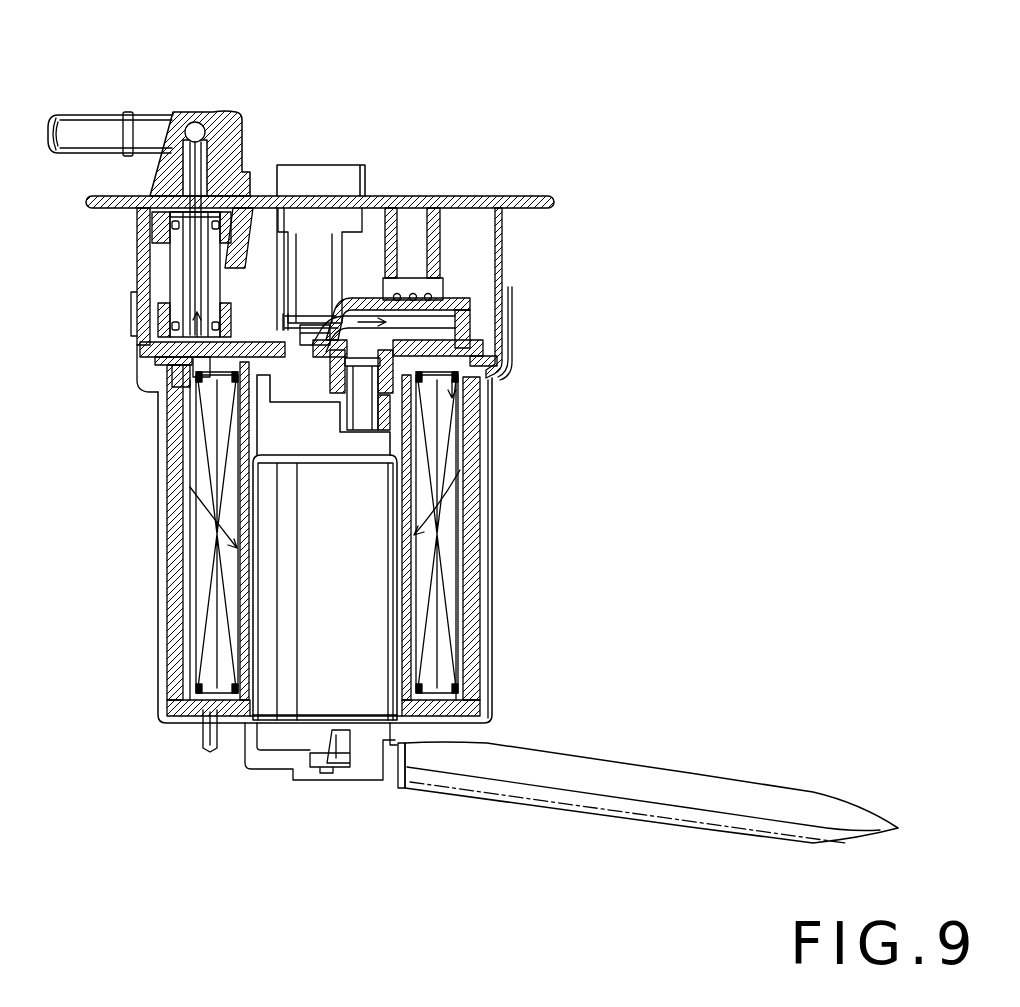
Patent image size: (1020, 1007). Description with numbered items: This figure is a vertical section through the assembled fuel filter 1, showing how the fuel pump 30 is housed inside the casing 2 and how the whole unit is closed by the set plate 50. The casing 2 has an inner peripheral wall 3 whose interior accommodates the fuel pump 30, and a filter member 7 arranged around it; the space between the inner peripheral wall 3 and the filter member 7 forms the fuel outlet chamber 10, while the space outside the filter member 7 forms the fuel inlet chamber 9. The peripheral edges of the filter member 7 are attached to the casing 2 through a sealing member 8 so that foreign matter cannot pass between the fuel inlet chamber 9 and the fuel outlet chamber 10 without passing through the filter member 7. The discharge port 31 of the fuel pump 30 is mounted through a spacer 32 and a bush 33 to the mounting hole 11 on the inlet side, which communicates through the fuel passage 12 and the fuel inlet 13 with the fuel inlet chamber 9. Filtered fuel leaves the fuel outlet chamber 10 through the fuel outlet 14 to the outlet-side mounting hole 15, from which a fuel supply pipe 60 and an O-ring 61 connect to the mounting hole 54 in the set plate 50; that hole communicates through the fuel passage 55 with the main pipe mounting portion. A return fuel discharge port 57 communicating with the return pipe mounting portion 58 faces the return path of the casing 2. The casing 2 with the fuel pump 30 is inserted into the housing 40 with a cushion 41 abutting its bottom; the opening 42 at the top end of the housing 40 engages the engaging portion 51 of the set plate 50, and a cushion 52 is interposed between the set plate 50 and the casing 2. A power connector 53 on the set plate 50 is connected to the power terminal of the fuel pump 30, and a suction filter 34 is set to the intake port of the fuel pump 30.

The fuel filter 1 is at (165, 495).
The casing 2 is at (475, 492).
The inner peripheral wall 3 is at (405, 580).
The filter member 7 is at (448, 576).
The sealing member 8 is at (198, 376).
The fuel inlet chamber 9 is at (462, 625).
The fuel outlet chamber 10 is at (446, 655).
The mounting hole 11 is at (473, 333).
The fuel passage 12 is at (458, 313).
The fuel inlet 13 is at (483, 346).
The fuel outlet 14 is at (178, 366).
The mounting hole 15 is at (150, 362).
The fuel pump 30 is at (300, 622).
The discharge port 31 is at (363, 428).
The spacer 32 is at (398, 423).
The bush 33 is at (442, 400).
The suction filter 34 is at (775, 800).
The housing 40 is at (492, 535).
The cushion 41 is at (482, 707).
The opening 42 is at (152, 348).
The set plate 50 is at (480, 195).
The engaging portion 51 is at (138, 322).
The cushion 52 is at (432, 280).
The power connector 53 is at (372, 182).
The mounting hole 54 is at (152, 198).
The fuel passage 55 is at (190, 125).
The return fuel discharge port 57 is at (232, 265).
The return pipe mounting portion 58 is at (88, 128).
The fuel supply pipe 60 is at (195, 283).
The O-ring 61 is at (168, 222).